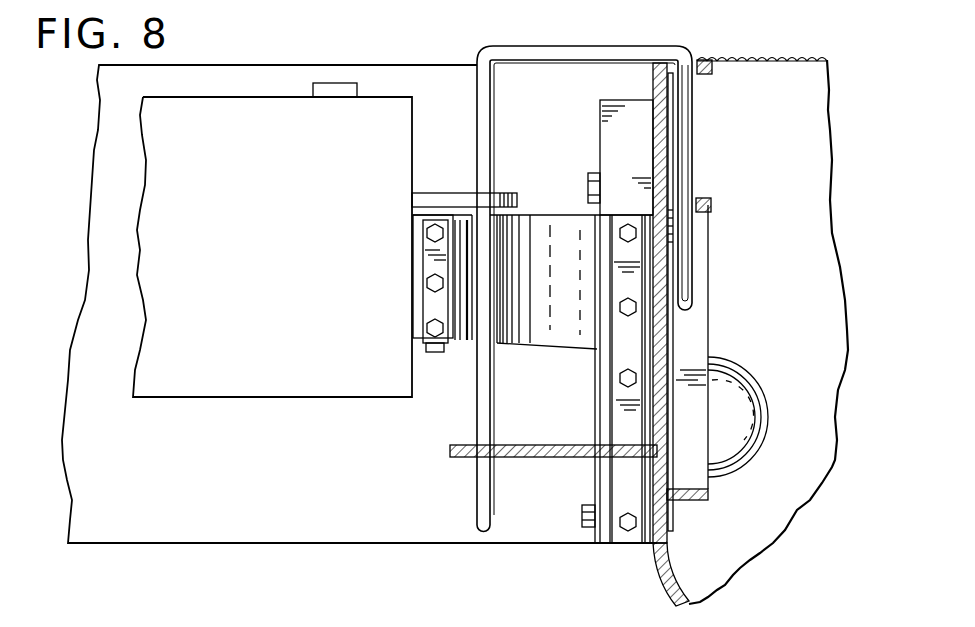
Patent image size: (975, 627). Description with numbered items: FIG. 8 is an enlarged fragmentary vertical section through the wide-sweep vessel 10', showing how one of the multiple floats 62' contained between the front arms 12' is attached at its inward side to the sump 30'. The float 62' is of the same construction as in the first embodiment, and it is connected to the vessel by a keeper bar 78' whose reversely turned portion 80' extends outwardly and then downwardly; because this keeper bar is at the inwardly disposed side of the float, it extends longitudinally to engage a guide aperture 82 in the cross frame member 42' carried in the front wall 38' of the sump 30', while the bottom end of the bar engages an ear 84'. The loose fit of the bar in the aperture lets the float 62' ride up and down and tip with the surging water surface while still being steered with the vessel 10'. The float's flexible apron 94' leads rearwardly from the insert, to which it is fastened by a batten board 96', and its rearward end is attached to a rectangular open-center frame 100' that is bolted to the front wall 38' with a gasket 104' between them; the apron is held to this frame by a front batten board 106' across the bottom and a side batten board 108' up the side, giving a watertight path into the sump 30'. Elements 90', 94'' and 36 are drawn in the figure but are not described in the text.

The vessel 10' is at (359, 321).
The front arms 12' is at (65, 324).
The float 62' is at (232, 247).
The mounting block 90' is at (342, 66).
The keeper bar 78' is at (464, 122).
The reversely turned portion 80' is at (584, 278).
The rectangular frame 100' is at (605, 122).
The front wall 38' is at (635, 286).
The cross frame member 42' is at (657, 280).
The sump 30' is at (661, 580).
The gasket 104' is at (578, 405).
The side batten board 108' is at (609, 554).
The front batten board 106' is at (571, 545).
The bellows conduit 94'' is at (530, 297).
The batten board 96' is at (445, 302).
The ear 84' is at (553, 512).
The apron 94' is at (773, 352).
The guide aperture 82 is at (704, 72).
The panel 36 is at (822, 278).